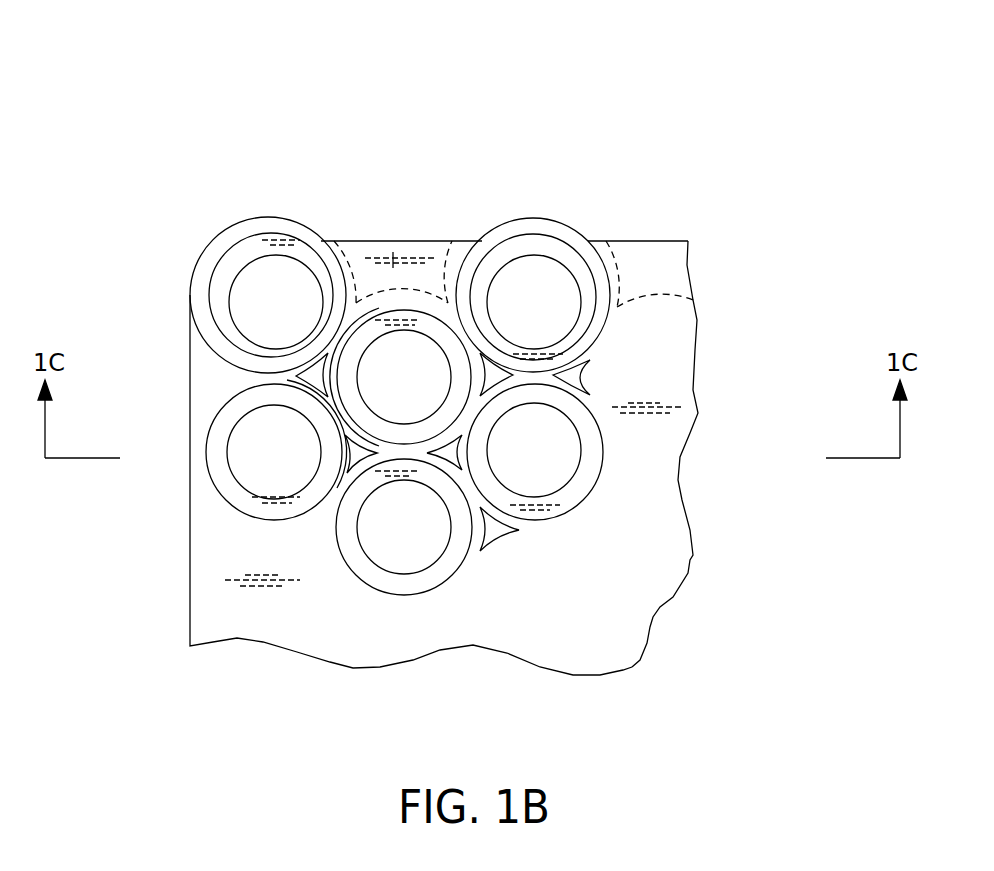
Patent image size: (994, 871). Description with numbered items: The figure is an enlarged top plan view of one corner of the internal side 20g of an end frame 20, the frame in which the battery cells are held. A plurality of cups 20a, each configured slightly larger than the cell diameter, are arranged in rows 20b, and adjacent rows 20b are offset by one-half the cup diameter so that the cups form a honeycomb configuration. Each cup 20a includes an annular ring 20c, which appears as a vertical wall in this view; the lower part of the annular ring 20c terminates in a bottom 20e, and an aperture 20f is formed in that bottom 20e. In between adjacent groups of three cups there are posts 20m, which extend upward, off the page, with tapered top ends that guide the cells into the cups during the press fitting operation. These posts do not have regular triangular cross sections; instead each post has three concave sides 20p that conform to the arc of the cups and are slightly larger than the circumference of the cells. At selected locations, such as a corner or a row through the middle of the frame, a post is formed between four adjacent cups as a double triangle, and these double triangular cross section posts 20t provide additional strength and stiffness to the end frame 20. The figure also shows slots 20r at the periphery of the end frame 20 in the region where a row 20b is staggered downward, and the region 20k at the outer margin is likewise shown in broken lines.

The end frame 20 is at (251, 605).
The cup 20a is at (590, 456).
The row 20b is at (276, 125).
The annular ring 20c is at (210, 477).
The bottom 20e is at (435, 572).
The aperture 20f is at (388, 543).
The internal side 20g is at (628, 570).
The recess 20k is at (645, 272).
The post 20m is at (576, 376).
The concave side 20p is at (495, 530).
The slot 20r is at (405, 250).
The double triangular cross section post 20t is at (322, 376).